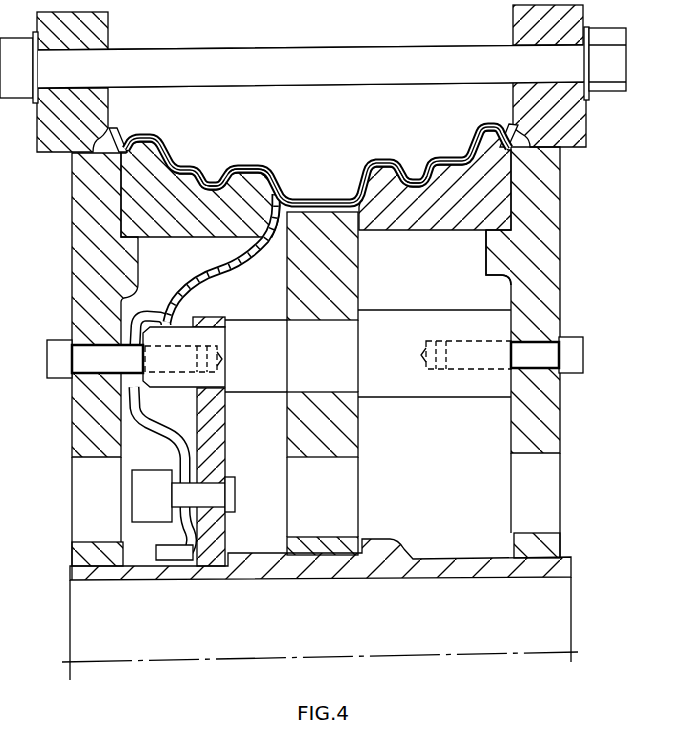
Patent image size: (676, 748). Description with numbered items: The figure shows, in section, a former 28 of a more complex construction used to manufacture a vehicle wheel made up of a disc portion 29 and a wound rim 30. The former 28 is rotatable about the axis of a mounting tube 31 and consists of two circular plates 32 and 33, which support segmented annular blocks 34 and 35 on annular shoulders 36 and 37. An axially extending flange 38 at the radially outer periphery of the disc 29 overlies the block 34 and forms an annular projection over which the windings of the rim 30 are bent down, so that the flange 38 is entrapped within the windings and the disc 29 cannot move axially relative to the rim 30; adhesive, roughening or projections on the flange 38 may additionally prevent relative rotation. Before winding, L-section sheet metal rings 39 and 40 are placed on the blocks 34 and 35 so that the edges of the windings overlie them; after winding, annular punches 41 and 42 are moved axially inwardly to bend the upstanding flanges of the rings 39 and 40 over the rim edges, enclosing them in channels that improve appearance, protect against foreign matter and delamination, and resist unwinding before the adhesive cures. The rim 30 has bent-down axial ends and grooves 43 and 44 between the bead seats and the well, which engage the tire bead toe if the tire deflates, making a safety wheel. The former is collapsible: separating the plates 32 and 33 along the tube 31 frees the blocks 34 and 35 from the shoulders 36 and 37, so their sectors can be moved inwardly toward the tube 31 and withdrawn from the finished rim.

The former 28 is at (64, 277).
The disc portion 29 is at (216, 268).
The rim 30 is at (180, 165).
The mounting tube 31 is at (220, 580).
The circular plate 32 is at (80, 421).
The circular plate 33 is at (517, 447).
The segmented annular block 34 is at (146, 233).
The segmented annular block 35 is at (456, 224).
The annular shoulder 36 is at (139, 273).
The annular shoulder 37 is at (492, 258).
The axially extending flange 38 is at (246, 168).
The L-section sheet metal ring 39 is at (118, 130).
The L-section sheet metal ring 40 is at (508, 128).
The annular punch 41 is at (108, 22).
The annular punch 42 is at (513, 28).
The groove 43 is at (214, 180).
The groove 44 is at (410, 180).